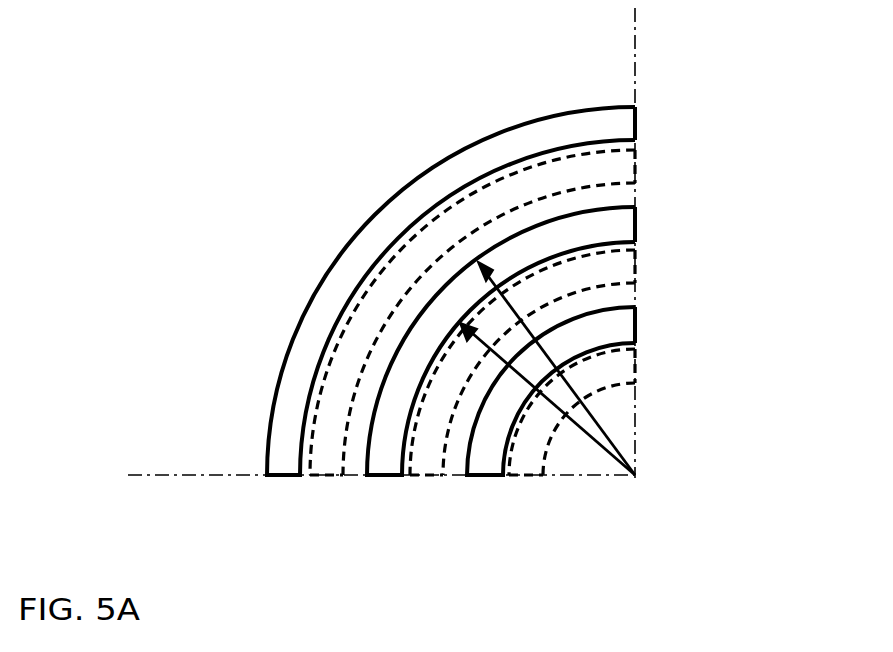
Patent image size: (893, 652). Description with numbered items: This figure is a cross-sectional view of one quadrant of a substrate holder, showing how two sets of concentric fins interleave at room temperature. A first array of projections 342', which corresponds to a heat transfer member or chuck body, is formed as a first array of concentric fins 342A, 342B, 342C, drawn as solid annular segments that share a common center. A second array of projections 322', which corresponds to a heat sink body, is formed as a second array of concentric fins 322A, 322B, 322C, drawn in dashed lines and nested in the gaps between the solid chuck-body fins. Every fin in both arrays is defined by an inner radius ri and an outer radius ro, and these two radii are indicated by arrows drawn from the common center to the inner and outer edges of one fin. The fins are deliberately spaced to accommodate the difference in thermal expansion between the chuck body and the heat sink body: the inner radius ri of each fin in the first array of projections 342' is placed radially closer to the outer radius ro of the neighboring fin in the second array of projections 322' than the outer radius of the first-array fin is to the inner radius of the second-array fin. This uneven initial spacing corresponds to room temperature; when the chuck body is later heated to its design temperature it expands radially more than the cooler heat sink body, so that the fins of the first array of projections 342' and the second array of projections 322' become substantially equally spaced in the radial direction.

The concentric fin 342C is at (300, 365).
The concentric fin 342B is at (400, 392).
The concentric fin 342A is at (493, 428).
The concentric fin 322C is at (487, 203).
The concentric fin 322B is at (568, 270).
The concentric fin 322A is at (610, 375).
The first array of projections 342' is at (709, 225).
The second array of projections 322' is at (472, 364).
The outer radius ro is at (587, 407).
The inner radius ri is at (580, 432).